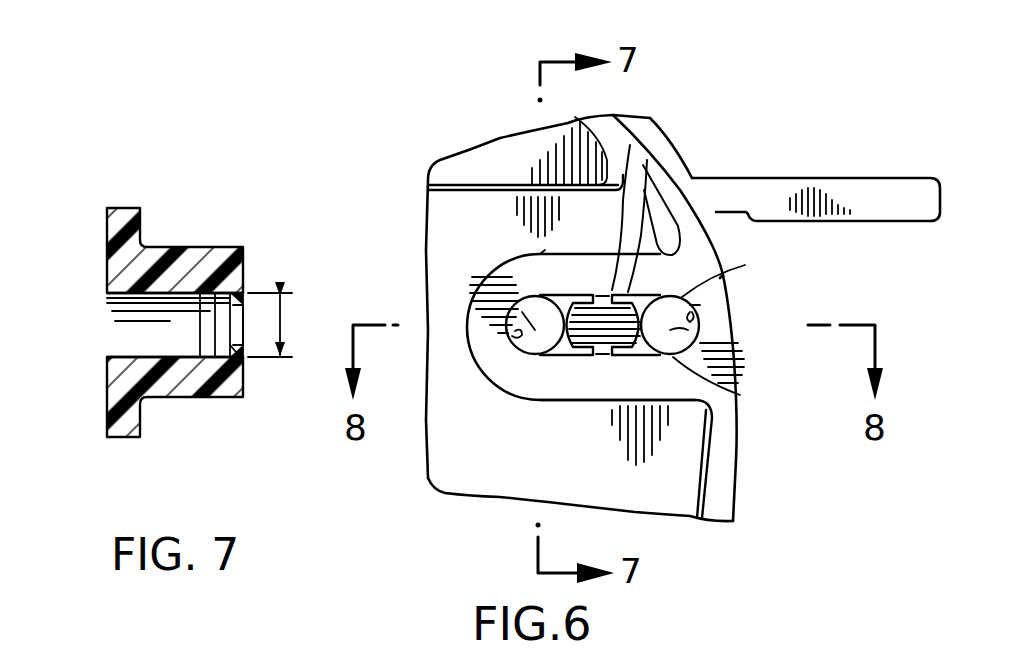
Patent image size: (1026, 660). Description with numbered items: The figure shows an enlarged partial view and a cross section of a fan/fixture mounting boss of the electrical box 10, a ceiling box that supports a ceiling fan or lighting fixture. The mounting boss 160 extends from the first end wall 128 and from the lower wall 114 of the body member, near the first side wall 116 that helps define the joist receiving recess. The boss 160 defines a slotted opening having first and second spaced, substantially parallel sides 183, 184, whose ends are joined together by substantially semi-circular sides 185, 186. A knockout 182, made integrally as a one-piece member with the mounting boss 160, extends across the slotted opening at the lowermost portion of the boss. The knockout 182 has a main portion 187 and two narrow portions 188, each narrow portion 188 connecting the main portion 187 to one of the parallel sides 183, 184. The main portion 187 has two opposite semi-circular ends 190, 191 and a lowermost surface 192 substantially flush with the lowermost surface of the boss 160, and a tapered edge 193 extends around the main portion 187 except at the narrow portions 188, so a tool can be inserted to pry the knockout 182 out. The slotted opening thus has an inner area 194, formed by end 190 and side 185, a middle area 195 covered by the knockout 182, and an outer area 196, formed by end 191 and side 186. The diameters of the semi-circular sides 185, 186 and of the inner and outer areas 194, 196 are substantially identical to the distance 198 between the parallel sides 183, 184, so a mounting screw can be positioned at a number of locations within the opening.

In FIG. 7, the electrical box 10 is at (88, 172).
In FIG. 6, the electrical box 10 is at (468, 82).
In FIG. 7, the lower wall 114 is at (150, 225).
In FIG. 6, the lower wall 114 is at (493, 478).
In FIG. 6, the first side wall 116 is at (460, 185).
In FIG. 6, the first end wall 128 is at (738, 500).
In FIG. 7, the second mounting boss 160 is at (165, 243).
In FIG. 6, the second mounting boss 160 is at (490, 268).
In FIG. 7, the second knockout 182 is at (205, 292).
In FIG. 6, the second knockout 182 is at (555, 352).
In FIG. 7, the first parallel side 183 is at (110, 300).
In FIG. 6, the first parallel side 183 is at (685, 298).
In FIG. 7, the second parallel side 184 is at (105, 352).
In FIG. 6, the second parallel side 184 is at (673, 357).
In FIG. 6, the first semi-circular side 185 is at (530, 335).
In FIG. 6, the second semi-circular side 186 is at (693, 303).
In FIG. 7, the main portion 187 is at (255, 320).
In FIG. 6, the main portion 187 is at (582, 294).
In FIG. 7, the narrow portions 188 is at (245, 300).
In FIG. 6, the narrow portions 188 is at (604, 296).
In FIG. 7, the first semi-circular end 190 is at (240, 335).
In FIG. 6, the first semi-circular end 190 is at (540, 296).
In FIG. 6, the second semi-circular end 191 is at (712, 367).
In FIG. 7, the lowermost surface 192 is at (226, 352).
In FIG. 6, the lowermost surface 192 is at (582, 356).
In FIG. 7, the tapered edge 193 is at (218, 292).
In FIG. 6, the tapered edge 193 is at (542, 355).
In FIG. 7, the inner area 194 is at (135, 340).
In FIG. 6, the inner area 194 is at (500, 283).
In FIG. 6, the middle area 195 is at (650, 195).
In FIG. 6, the outer area 196 is at (700, 325).
In FIG. 7, the distance between parallel sides 198 is at (295, 325).